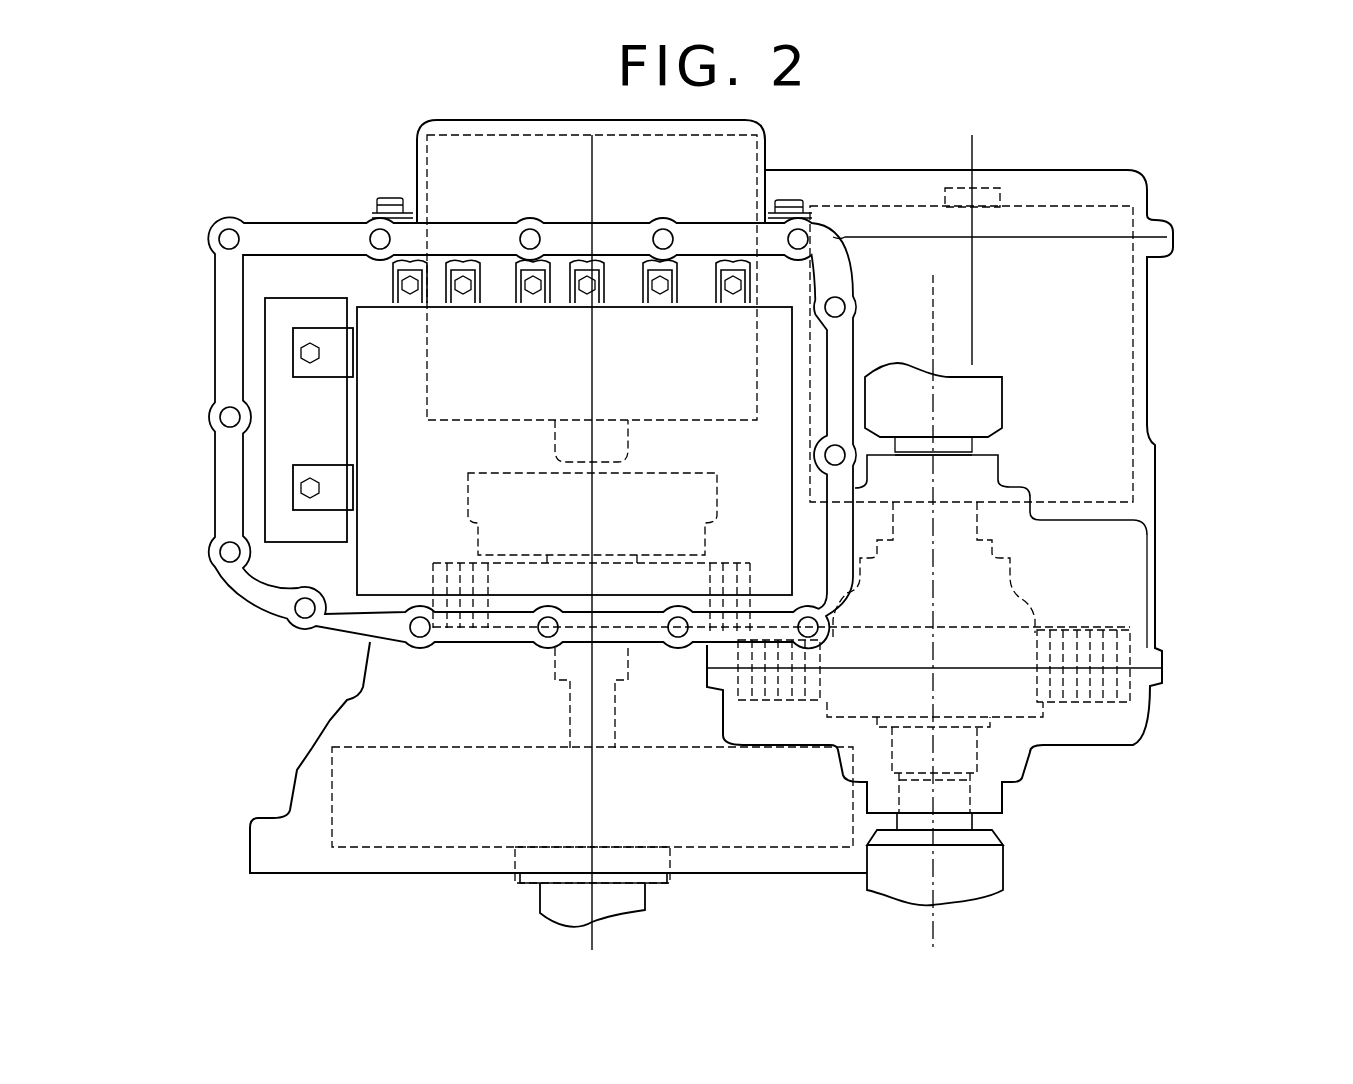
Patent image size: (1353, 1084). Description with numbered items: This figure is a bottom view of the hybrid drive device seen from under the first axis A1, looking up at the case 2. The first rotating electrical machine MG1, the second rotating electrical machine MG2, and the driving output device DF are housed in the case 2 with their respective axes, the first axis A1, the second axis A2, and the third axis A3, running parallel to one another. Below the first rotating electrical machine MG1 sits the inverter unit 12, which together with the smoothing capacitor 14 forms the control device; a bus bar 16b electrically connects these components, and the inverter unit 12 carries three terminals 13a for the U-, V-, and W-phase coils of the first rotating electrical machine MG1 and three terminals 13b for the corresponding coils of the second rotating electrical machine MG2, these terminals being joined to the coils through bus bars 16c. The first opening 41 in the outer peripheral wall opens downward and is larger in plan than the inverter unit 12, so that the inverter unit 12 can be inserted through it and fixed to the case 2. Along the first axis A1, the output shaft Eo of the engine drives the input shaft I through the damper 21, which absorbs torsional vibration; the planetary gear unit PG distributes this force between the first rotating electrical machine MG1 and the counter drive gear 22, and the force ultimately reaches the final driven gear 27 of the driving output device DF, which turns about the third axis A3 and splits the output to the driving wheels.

The case 2 is at (1150, 443).
The first rotating electrical machine MG1 is at (413, 177).
The second rotating electrical machine MG2 is at (1147, 338).
The first opening 41 is at (290, 572).
The inverter unit 12 is at (367, 590).
The smoothing capacitor 14 is at (265, 363).
The bus bar 16b is at (322, 338).
The bus bars 16c is at (518, 262).
The terminals 13a is at (528, 303).
The terminals 13b is at (728, 308).
The counter drive gear 22 is at (450, 557).
The planetary gear unit PG is at (708, 497).
The damper 21 is at (417, 748).
The input shaft I is at (570, 718).
The first axis A1 is at (593, 807).
The second axis A2 is at (972, 333).
The third axis A3 is at (935, 872).
The driving output device DF is at (1085, 607).
The final driven gear 27 is at (1060, 700).
The output shaft Eo is at (543, 903).